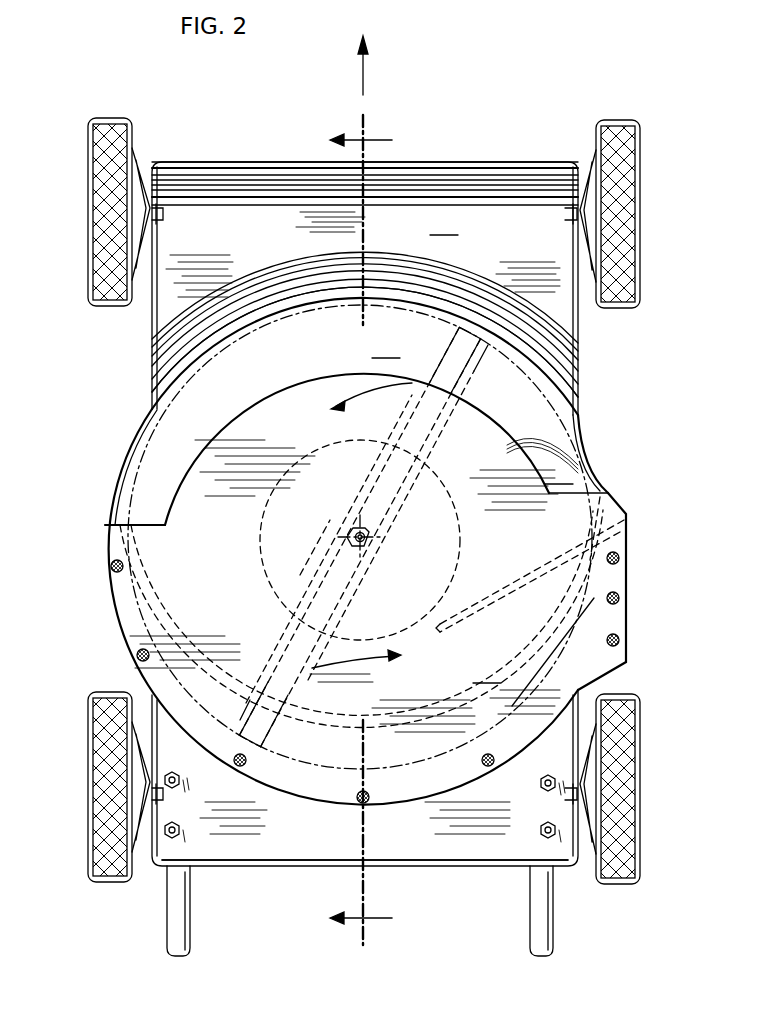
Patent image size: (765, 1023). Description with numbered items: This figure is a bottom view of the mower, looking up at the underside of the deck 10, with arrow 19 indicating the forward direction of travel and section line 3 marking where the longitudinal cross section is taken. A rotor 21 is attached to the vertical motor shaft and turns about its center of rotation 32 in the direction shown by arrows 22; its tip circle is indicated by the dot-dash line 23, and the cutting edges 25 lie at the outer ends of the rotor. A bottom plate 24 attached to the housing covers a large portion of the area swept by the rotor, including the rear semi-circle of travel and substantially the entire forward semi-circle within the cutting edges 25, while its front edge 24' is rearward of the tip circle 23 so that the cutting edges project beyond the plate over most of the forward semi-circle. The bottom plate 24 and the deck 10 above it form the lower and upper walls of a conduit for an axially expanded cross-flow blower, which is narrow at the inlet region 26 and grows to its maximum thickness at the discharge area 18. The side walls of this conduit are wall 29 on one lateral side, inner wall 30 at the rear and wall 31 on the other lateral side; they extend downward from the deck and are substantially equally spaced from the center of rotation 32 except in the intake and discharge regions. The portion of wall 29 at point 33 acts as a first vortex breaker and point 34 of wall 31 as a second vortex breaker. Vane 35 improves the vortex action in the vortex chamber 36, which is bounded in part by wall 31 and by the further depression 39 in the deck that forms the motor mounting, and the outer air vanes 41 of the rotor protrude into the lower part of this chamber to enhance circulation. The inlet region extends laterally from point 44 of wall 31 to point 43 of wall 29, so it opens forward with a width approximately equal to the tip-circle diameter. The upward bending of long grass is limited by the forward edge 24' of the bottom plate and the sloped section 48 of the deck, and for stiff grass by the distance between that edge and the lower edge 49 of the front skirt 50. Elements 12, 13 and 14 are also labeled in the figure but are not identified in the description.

The section line 3- 3 is at (361, 535).
The deck 10 is at (354, 514).
The front wheels 12 is at (122, 213).
The rear wheels 13 is at (100, 798).
The handle posts 14 is at (168, 912).
The discharge area 18 is at (626, 590).
The arrow 19 is at (363, 78).
The rotor 21 is at (306, 574).
The arrows 22 is at (405, 690).
The tip circle 23 is at (300, 311).
The bottom plate 24 is at (365, 758).
The front edge of bottom plate 24' is at (357, 440).
The cutting edges 25 is at (427, 372).
The inlet region 26 is at (365, 342).
The wall 29 is at (105, 600).
The inner wall 30 is at (352, 798).
The wall 31 is at (600, 512).
The center of rotation 32 is at (371, 538).
The first vortex breaker 33 is at (150, 403).
The second vortex breaker 34 is at (617, 527).
The vane 35 is at (500, 595).
The vortex chamber 36 is at (557, 465).
The depression in deck 39 is at (457, 562).
The outer air vanes 41 is at (475, 378).
The point of wall 29 43 is at (113, 522).
The point of wall 31 44 is at (608, 493).
The sloped section of deck 48 is at (293, 280).
The lower edge of front skirt 49 is at (455, 170).
The front skirt 50 is at (272, 182).